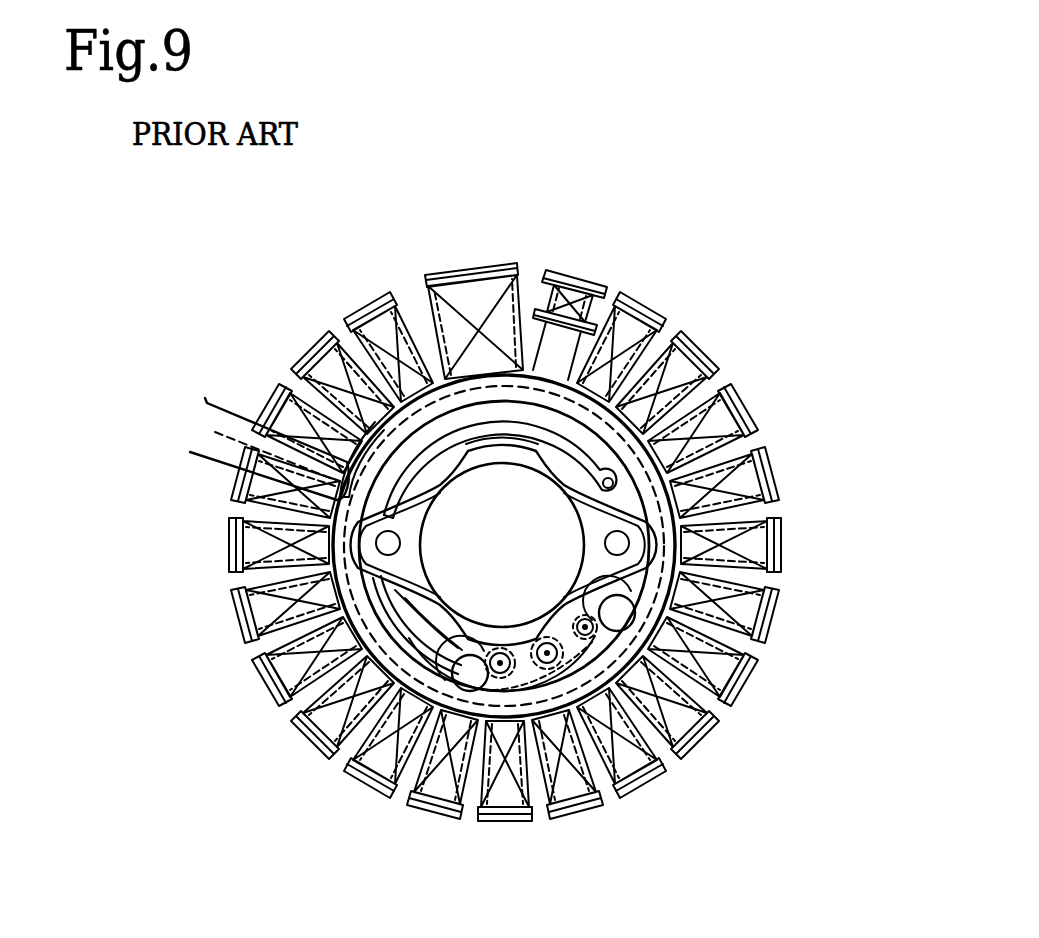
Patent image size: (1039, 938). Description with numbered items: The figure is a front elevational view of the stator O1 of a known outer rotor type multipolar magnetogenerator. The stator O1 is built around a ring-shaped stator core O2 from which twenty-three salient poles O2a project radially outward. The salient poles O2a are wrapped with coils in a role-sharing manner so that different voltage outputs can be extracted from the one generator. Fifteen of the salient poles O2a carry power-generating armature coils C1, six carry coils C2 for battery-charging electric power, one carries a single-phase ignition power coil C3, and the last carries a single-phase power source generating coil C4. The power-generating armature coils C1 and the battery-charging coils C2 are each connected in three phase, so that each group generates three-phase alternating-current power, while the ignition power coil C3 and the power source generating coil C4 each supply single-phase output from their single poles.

The stator O1 is at (482, 205).
The stator core O2 is at (378, 437).
The salient poles O2a is at (367, 775).
The power-generating armature coils C1 is at (662, 330).
The coils for battery-charging electric power C2 is at (390, 295).
The single-phase ignition power coil C3 is at (438, 307).
The single-phase power source generating coil C4 is at (537, 368).